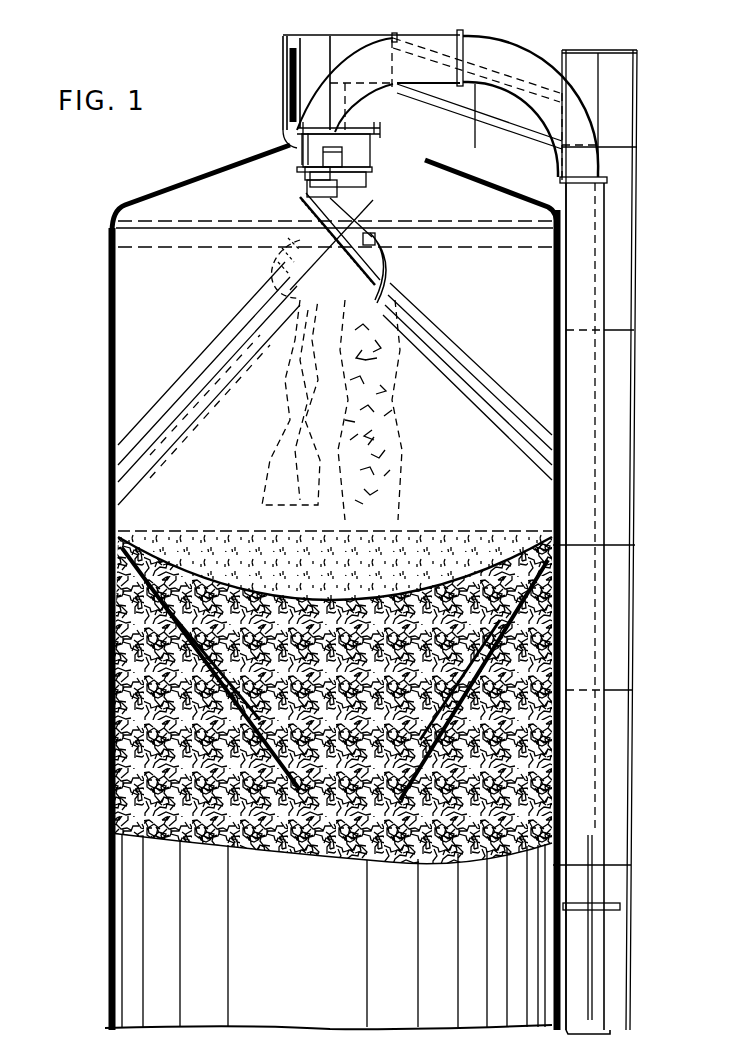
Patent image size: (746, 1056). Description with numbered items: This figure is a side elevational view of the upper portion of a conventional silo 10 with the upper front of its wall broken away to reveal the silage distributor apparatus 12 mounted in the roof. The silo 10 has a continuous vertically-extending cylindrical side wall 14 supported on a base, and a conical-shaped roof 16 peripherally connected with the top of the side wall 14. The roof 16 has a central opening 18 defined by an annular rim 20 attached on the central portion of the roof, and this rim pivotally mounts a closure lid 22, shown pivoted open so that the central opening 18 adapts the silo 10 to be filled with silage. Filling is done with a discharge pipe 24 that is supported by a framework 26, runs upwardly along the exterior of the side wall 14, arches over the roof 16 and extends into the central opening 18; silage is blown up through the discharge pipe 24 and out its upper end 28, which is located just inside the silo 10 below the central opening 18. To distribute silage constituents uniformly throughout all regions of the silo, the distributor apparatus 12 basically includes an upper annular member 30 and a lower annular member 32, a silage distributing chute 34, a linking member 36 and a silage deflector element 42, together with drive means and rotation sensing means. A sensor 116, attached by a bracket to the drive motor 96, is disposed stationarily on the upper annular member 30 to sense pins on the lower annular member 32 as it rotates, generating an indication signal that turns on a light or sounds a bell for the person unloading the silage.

The silo 10 is at (106, 296).
The silage distributor apparatus 12 is at (288, 184).
The side wall 14 is at (107, 331).
The roof 16 is at (170, 192).
The central opening 18 is at (363, 127).
The annular rim 20 is at (300, 120).
The closure lid 22 is at (292, 107).
The discharge pipe 24 is at (607, 388).
The framework 26 is at (637, 182).
The upper end 28 is at (350, 150).
The upper annular member 30 is at (293, 168).
The lower annular member 32 is at (372, 182).
The silage distributing chute 34 is at (357, 220).
The linking member 36 is at (280, 148).
The silage deflector element 42 is at (406, 267).
The drive motor 96 is at (338, 148).
The sensor 116 is at (305, 194).